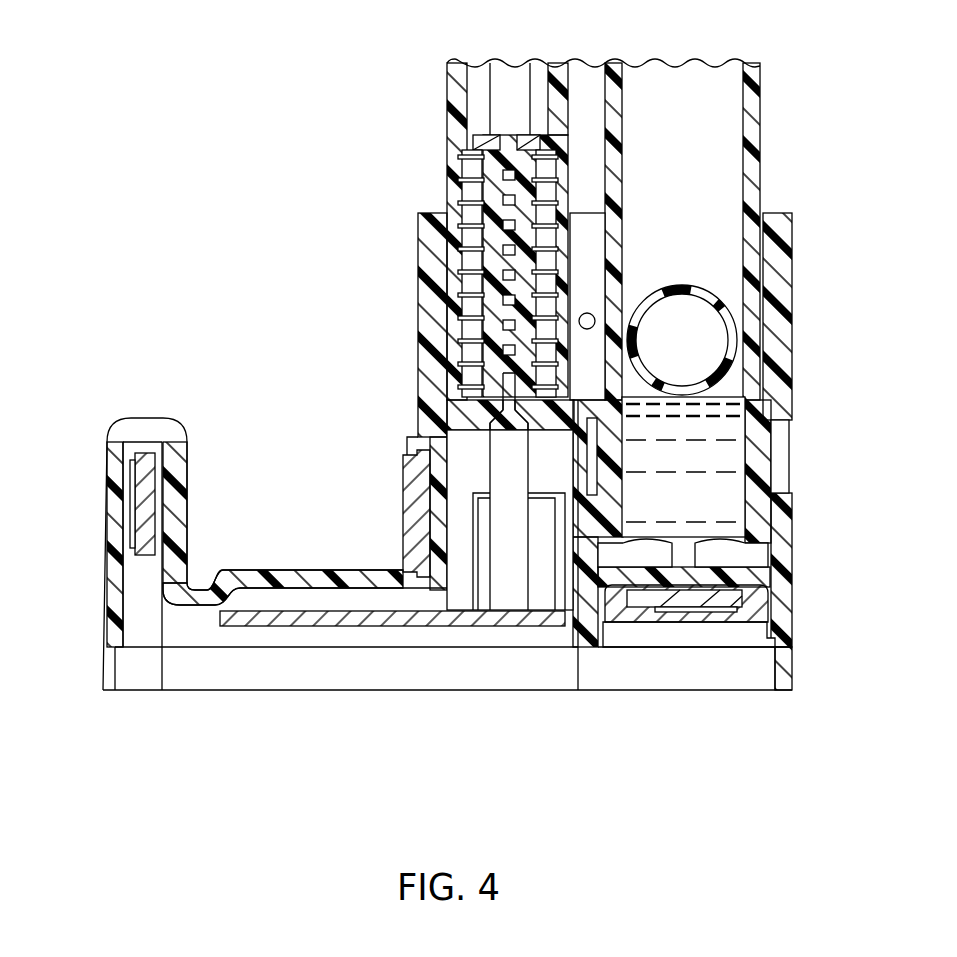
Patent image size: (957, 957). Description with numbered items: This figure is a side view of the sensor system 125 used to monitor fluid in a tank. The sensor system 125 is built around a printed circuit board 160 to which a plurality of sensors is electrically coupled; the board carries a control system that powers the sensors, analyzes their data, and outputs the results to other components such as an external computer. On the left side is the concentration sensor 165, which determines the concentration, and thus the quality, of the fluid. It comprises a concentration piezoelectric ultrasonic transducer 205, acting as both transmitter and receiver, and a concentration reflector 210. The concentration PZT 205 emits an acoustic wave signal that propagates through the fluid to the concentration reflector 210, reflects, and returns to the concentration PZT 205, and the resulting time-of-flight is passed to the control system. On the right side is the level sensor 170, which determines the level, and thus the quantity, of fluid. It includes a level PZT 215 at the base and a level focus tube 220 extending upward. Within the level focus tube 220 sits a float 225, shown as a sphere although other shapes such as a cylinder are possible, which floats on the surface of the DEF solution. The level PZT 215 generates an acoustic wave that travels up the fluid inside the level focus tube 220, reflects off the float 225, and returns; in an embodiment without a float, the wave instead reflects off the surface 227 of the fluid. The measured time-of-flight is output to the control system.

The sensor system 125 is at (278, 182).
The printed circuit board 160 is at (380, 628).
The concentration sensor 165 is at (205, 378).
The level sensor 170 is at (816, 563).
The concentration piezoelectric ultrasonic transducer 205 is at (147, 560).
The concentration reflector 210 is at (403, 485).
The level PZT 215 is at (685, 618).
The level focus tube 220 is at (762, 111).
The float 225 is at (712, 287).
The surface of the fluid 227 is at (728, 402).